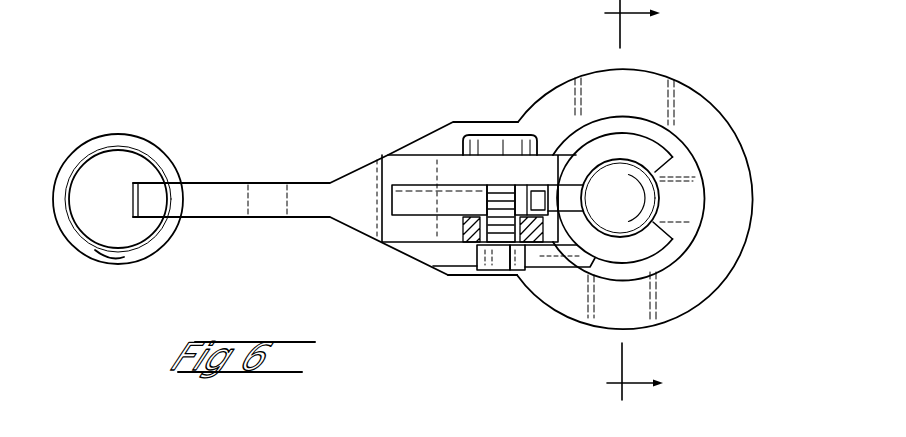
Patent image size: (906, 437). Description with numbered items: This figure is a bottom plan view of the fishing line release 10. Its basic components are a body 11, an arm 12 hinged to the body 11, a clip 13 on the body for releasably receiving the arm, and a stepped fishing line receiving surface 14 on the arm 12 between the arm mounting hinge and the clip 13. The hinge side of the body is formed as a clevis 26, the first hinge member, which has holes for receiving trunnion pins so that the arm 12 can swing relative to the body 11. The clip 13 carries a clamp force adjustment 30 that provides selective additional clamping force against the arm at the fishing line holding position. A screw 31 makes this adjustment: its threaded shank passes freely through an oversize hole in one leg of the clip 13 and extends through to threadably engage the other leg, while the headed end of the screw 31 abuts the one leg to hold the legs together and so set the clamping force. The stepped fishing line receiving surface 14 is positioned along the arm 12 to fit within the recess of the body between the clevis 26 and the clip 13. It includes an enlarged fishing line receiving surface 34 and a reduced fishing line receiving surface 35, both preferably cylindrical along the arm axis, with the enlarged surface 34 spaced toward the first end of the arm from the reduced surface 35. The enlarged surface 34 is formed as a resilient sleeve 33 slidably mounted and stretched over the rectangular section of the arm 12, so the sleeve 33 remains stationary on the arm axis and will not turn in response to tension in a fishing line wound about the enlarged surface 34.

The release 10 is at (138, 74).
The body 11 is at (228, 222).
The arm 12 is at (670, 198).
The clip 13 is at (670, 250).
The stepped fishing line receiving surface 14 is at (576, 325).
The clevis 26 is at (442, 143).
The clamp force adjustment 30 is at (508, 280).
The screw 31 is at (500, 279).
The resilient sleeve 33 is at (680, 276).
The enlarged fishing line receiving surface 34 is at (678, 137).
The reduced fishing line receiving surface 35 is at (655, 215).